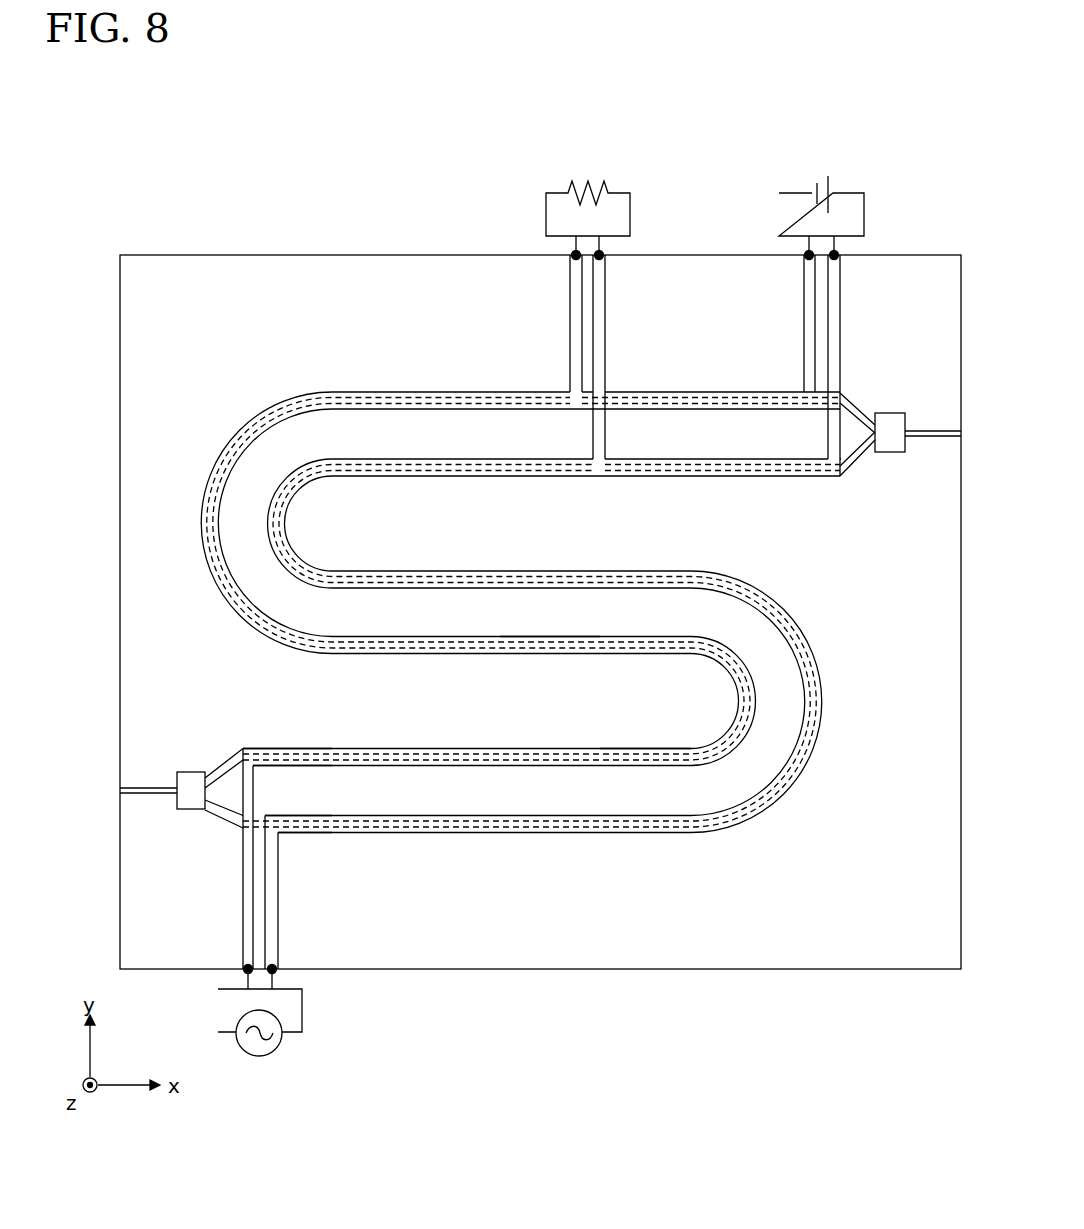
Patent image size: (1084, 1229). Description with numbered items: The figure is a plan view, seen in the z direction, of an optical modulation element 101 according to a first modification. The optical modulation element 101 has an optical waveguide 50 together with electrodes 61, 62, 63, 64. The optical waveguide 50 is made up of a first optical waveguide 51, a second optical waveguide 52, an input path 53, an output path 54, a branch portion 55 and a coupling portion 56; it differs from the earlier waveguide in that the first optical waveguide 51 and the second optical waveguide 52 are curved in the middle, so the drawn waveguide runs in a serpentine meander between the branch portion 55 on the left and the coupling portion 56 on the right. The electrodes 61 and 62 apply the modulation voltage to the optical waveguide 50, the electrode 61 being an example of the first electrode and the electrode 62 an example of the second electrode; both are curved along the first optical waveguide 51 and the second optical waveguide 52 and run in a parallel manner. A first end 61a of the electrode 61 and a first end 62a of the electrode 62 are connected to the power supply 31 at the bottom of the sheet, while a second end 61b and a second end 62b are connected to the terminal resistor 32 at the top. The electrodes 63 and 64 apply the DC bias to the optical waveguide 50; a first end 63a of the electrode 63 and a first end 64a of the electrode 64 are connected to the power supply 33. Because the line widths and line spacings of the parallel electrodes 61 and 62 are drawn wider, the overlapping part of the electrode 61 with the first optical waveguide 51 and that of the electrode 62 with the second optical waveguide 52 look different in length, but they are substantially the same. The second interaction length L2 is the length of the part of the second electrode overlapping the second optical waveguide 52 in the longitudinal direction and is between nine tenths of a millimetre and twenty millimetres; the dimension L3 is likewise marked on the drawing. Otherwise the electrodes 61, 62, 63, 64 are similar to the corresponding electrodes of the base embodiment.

The optical modulation element 101 is at (853, 136).
The optical waveguide 50 is at (866, 500).
The power supply 31 is at (280, 1046).
The terminal resistor 32 is at (608, 184).
The power supply 33 is at (830, 177).
The first optical waveguide 51 is at (311, 834).
The second optical waveguide 52 is at (311, 748).
The input path 53 is at (137, 802).
The output path 54 is at (934, 440).
The branch portion 55 is at (192, 771).
The coupling portion 56 is at (888, 411).
The electrode 61 is at (437, 816).
The electrode 62 is at (437, 749).
The electrode 63 is at (718, 477).
The electrode 64 is at (708, 410).
The first end 61a is at (278, 956).
The second end 61b is at (603, 270).
The first end 62a is at (241, 962).
The second end 62b is at (571, 270).
The first end 63a is at (838, 270).
The first end 64a is at (806, 270).
The second interaction length L2 is at (660, 748).
The length L3 is at (599, 656).